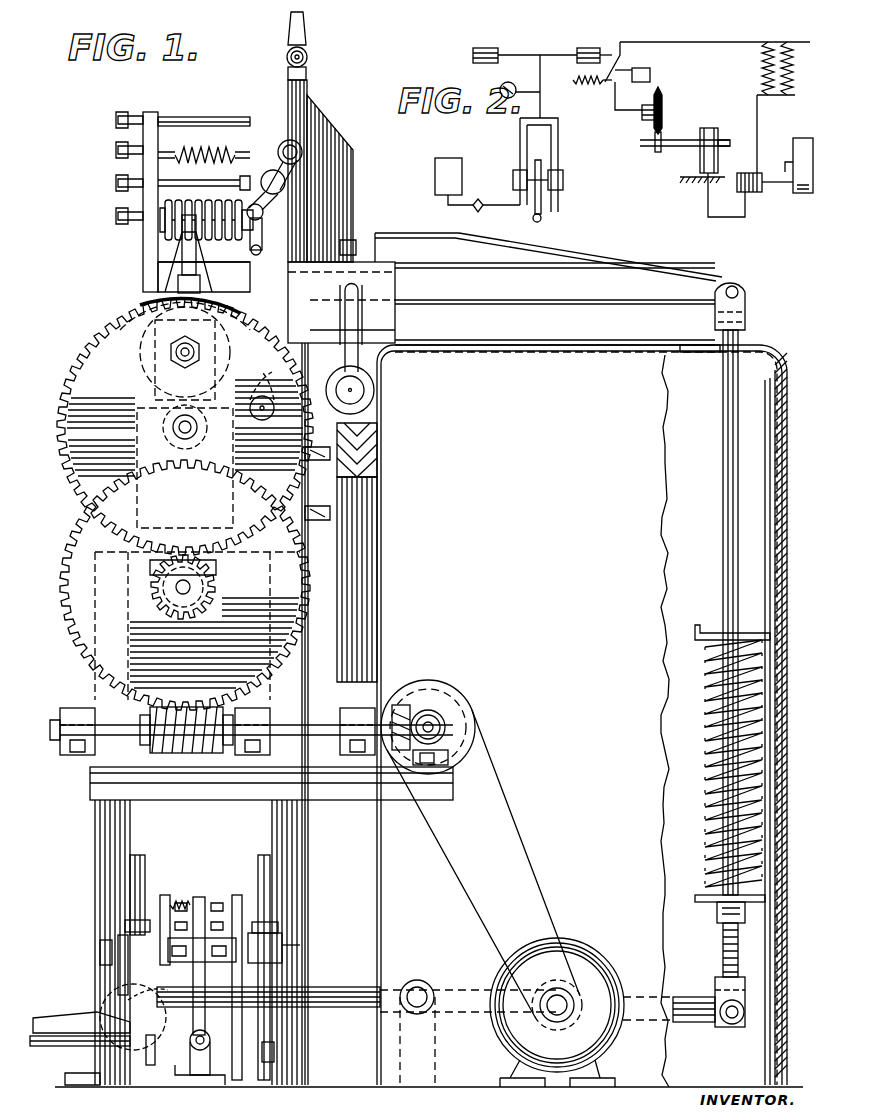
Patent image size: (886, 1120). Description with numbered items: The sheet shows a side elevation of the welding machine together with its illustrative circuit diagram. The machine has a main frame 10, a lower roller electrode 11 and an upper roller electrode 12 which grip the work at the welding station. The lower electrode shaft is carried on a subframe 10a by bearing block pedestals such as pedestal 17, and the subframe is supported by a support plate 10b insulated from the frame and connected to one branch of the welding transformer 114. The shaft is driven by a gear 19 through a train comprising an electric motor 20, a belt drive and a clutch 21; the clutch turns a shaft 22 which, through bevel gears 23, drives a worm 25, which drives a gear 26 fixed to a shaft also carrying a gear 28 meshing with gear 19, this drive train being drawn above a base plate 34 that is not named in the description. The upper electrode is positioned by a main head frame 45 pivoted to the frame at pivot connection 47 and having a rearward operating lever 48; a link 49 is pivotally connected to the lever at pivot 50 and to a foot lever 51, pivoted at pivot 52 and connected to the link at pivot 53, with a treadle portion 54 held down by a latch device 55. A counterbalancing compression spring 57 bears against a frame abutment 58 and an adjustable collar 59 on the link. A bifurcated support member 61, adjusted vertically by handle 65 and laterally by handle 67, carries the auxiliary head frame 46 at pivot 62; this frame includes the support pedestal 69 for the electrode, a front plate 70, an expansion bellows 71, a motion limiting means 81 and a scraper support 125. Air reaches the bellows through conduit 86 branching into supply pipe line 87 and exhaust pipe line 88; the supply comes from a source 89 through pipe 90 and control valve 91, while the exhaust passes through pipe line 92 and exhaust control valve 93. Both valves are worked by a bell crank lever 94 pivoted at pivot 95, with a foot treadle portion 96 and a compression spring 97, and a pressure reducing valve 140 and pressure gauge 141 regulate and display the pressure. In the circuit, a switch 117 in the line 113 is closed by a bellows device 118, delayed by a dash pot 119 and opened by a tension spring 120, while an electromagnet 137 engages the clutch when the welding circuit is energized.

In FIG. 1, the main frame 10 is at (630, 362).
In FIG. 1, the machine subframe 10a is at (357, 528).
In FIG. 2, the machine subframe 10a is at (685, 178).
In FIG. 1, the support plate 10b is at (345, 612).
In FIG. 1, the lower roller electrode 11 is at (185, 450).
In FIG. 2, the lower roller electrode 11 is at (657, 152).
In FIG. 1, the upper roller electrode 12 is at (150, 303).
In FIG. 2, the upper roller electrode 12 is at (662, 110).
In FIG. 2, the bearing block pedestal 17 is at (712, 128).
In FIG. 1, the gear 19 is at (97, 478).
In FIG. 1, the electric motor 20 is at (590, 968).
In FIG. 1, the clutch 21 is at (460, 690).
In FIG. 2, the clutch 21 is at (800, 195).
In FIG. 1, the shaft 22 is at (432, 727).
In FIG. 1, the bevel gears 23 is at (416, 720).
In FIG. 1, the worm 25 is at (188, 753).
In FIG. 1, the gear 26 is at (85, 625).
In FIG. 1, the gear 28 is at (218, 592).
In FIG. 1, the base plate 34 is at (325, 783).
In FIG. 1, the main head frame 45 is at (336, 102).
In FIG. 1, the auxiliary head frame 46 is at (128, 266).
In FIG. 1, the pivot connection 47 is at (375, 390).
In FIG. 1, the operating lever 48 is at (585, 292).
In FIG. 1, the link 49 is at (730, 474).
In FIG. 1, the pivot connection 50 is at (745, 292).
In FIG. 1, the foot lever 51 is at (330, 990).
In FIG. 1, the pivot 52 is at (420, 985).
In FIG. 1, the pivot connection 53 is at (732, 1020).
In FIG. 1, the treadle portion 54 is at (60, 1016).
In FIG. 1, the latch device 55 is at (97, 997).
In FIG. 1, the counterbalancing compression spring 57 is at (707, 730).
In FIG. 1, the frame abutment 58 is at (695, 630).
In FIG. 1, the collar 59 is at (700, 893).
In FIG. 1, the support member 61 is at (258, 285).
In FIG. 1, the pivot 62 is at (262, 420).
In FIG. 1, the handle 65 is at (290, 27).
In FIG. 1, the handle 67 is at (290, 145).
In FIG. 2, the support pedestal 69 is at (648, 120).
In FIG. 1, the front plate 70 is at (150, 137).
In FIG. 2, the expansion bellows 71 is at (478, 48).
In FIG. 1, the motion limiting means 81 is at (190, 120).
In FIG. 2, the conduit 86 is at (560, 120).
In FIG. 1, the supply pipe line 87 is at (130, 865).
In FIG. 2, the supply pipe line 87 is at (520, 151).
In FIG. 1, the exhaust pipe line 88 is at (270, 875).
In FIG. 2, the exhaust pipe line 88 is at (558, 160).
In FIG. 2, the source of fluid pressure supply 89 is at (435, 182).
In FIG. 1, the pipe 90 is at (150, 1055).
In FIG. 2, the pipe 90 is at (525, 219).
In FIG. 1, the control valve 91 is at (100, 950).
In FIG. 2, the control valve 91 is at (513, 185).
In FIG. 1, the pipe line 92 is at (266, 1052).
In FIG. 2, the pipe line 92 is at (558, 205).
In FIG. 1, the exhaust control valve 93 is at (285, 935).
In FIG. 2, the exhaust control valve 93 is at (563, 180).
In FIG. 1, the bell crank valve operating lever 94 is at (205, 900).
In FIG. 2, the bell crank valve operating lever 94 is at (535, 162).
In FIG. 1, the pivot 95 is at (198, 1050).
In FIG. 2, the pivot 95 is at (541, 218).
In FIG. 1, the foot treadle portion 96 is at (50, 1085).
In FIG. 1, the compression spring 97 is at (178, 900).
In FIG. 2, the line 113 is at (708, 42).
In FIG. 2, the welding transformer 114 is at (754, 69).
In FIG. 2, the switch 117 is at (625, 60).
In FIG. 2, the bellows device 118 is at (585, 48).
In FIG. 2, the dash pot device 119 is at (650, 75).
In FIG. 2, the tension spring 120 is at (580, 85).
In FIG. 1, the scraper support 125 is at (150, 222).
In FIG. 2, the electromagnet 137 is at (750, 195).
In FIG. 2, the pressure reducing valve 140 is at (473, 207).
In FIG. 2, the pressure gauge 141 is at (505, 98).